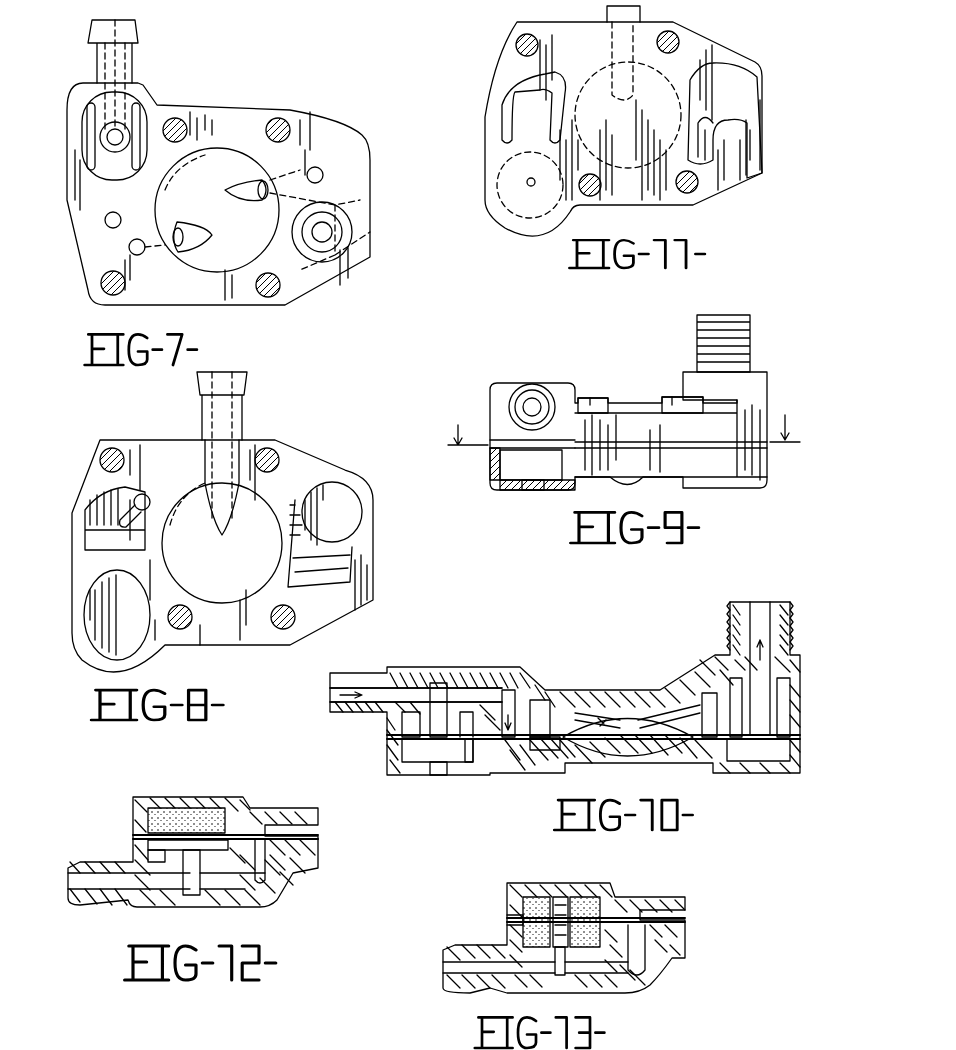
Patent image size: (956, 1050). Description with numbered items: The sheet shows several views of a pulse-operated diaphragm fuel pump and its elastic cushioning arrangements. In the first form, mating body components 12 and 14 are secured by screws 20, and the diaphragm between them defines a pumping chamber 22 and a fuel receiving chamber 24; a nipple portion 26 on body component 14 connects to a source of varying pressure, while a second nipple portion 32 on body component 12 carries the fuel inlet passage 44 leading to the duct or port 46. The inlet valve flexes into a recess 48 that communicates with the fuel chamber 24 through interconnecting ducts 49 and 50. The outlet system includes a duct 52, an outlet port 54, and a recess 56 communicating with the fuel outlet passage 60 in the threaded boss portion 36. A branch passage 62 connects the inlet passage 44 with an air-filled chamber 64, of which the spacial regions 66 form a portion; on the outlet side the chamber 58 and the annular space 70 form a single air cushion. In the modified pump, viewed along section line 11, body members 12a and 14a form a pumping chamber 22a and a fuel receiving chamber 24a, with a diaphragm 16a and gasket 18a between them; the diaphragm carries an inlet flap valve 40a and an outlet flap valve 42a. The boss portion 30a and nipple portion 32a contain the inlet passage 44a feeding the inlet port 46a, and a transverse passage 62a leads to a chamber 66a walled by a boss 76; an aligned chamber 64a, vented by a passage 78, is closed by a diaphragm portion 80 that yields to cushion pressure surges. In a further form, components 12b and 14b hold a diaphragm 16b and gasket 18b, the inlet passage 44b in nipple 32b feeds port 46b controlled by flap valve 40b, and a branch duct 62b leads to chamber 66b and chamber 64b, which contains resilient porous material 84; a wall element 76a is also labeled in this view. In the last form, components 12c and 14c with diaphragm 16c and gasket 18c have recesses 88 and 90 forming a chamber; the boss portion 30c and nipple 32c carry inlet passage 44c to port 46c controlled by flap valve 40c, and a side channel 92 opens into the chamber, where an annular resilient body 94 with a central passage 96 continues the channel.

In FIG. 7, the body component 12 is at (370, 170).
In FIG. 9, the pump body member 12a is at (495, 397).
In FIG. 10, the pump body member 12a is at (385, 722).
In FIG. 12, the pump component 12b is at (298, 878).
In FIG. 13, the pump component 12c is at (665, 965).
In FIG. 8, the body component 14 is at (373, 568).
In FIG. 11, the body component 14 is at (623, 129).
In FIG. 9, the pump body member 14a is at (498, 490).
In FIG. 10, the pump body member 14a is at (555, 762).
In FIG. 12, the pump component 14b is at (230, 805).
In FIG. 13, the pump component 14c is at (620, 893).
In FIG. 10, the diaphragm 16a is at (613, 685).
In FIG. 12, the diaphragm 16b is at (318, 862).
In FIG. 13, the diaphragm 16c is at (683, 935).
In FIG. 10, the gasket 18a is at (590, 752).
In FIG. 12, the gasket 18b is at (300, 832).
In FIG. 13, the gasket 18c is at (687, 915).
In FIG. 7, the screws 20 is at (176, 118).
In FIG. 8, the screws 20 is at (106, 452).
In FIG. 11, the screws 20 is at (517, 42).
In FIG. 9, the screws 20 is at (668, 400).
In FIG. 8, the pumping chamber 22 is at (203, 490).
In FIG. 10, the pulsing or pumping chamber 22a is at (628, 752).
In FIG. 7, the fuel receiving chamber 24 is at (228, 165).
In FIG. 11, the fuel receiving chamber 24 is at (628, 115).
In FIG. 10, the fuel receiving chamber 24a is at (640, 712).
In FIG. 8, the nipple portion 26 is at (242, 410).
In FIG. 11, the nipple portion 26 is at (640, 12).
In FIG. 10, the boss portion 30a is at (487, 673).
In FIG. 13, the boss portion 30c is at (600, 992).
In FIG. 7, the second nipple portion 32 is at (132, 52).
In FIG. 9, the second nipple portion 32 is at (528, 390).
In FIG. 10, the nipple portion 32a is at (375, 680).
In FIG. 12, the nipple portion 32b is at (95, 865).
In FIG. 13, the nipple portion 32c is at (475, 992).
In FIG. 7, the boss portion 36 is at (355, 203).
In FIG. 11, the fuel inlet flap valve 40a is at (525, 97).
In FIG. 10, the fuel inlet flap valve 40a is at (512, 760).
In FIG. 12, the inlet flap valve 40b is at (262, 840).
In FIG. 13, the flap valve 40c is at (640, 897).
In FIG. 11, the outlet flap valve 42a is at (735, 140).
In FIG. 10, the outlet flap valve 42a is at (710, 745).
In FIG. 7, the fuel inlet passage 44 is at (120, 72).
In FIG. 9, the fuel inlet passage 44 is at (536, 402).
In FIG. 10, the fuel inlet passage 44a is at (393, 690).
In FIG. 12, the fuel inlet passage 44b is at (160, 885).
In FIG. 13, the fuel inlet passage 44c is at (447, 968).
In FIG. 7, the duct or port 46 is at (105, 221).
In FIG. 10, the inlet port or duct 46a is at (513, 695).
In FIG. 12, the port or duct 46b is at (272, 895).
In FIG. 13, the duct or port 46c is at (645, 962).
In FIG. 8, the recess or passage 48 is at (100, 505).
In FIG. 7, the duct 49 is at (130, 249).
In FIG. 7, the duct 50 is at (176, 232).
In FIG. 7, the duct 52 is at (258, 200).
In FIG. 7, the outlet port or duct 54 is at (323, 177).
In FIG. 8, the recess 56 is at (342, 572).
In FIG. 8, the chamber 58 is at (349, 500).
In FIG. 7, the fuel outlet passage 60 is at (330, 237).
In FIG. 7, the branch passage 62 is at (113, 137).
In FIG. 10, the branch or transverse passage 62a is at (438, 683).
In FIG. 12, the branch passage or duct 62b is at (197, 880).
In FIG. 8, the chamber 64 is at (100, 637).
In FIG. 9, the recess or chamber 64a is at (505, 470).
In FIG. 10, the recess or chamber 64a is at (410, 760).
In FIG. 12, the chamber 64b is at (150, 808).
In FIG. 7, the spacial regions 66 is at (82, 135).
In FIG. 10, the space or chamber 66a is at (410, 727).
In FIG. 12, the space or chamber 66b is at (148, 848).
In FIG. 7, the annular space 70 is at (352, 231).
In FIG. 10, the boss 76 is at (405, 750).
In FIG. 12, the valve 76a is at (152, 862).
In FIG. 9, the vent opening or passage 78 is at (533, 490).
In FIG. 10, the vent opening or passage 78 is at (437, 768).
In FIG. 11, the portion of diaphragm 80 is at (520, 212).
In FIG. 10, the portion of diaphragm 80 is at (468, 752).
In FIG. 12, the resilient, porous or cellular material 84 is at (185, 820).
In FIG. 13, the recess 88 is at (520, 932).
In FIG. 13, the mating recess 90 is at (590, 900).
In FIG. 13, the side branch or channel 92 is at (558, 978).
In FIG. 13, the resilient or elastic body 94 is at (530, 900).
In FIG. 13, the central passage 96 is at (561, 900).
In FIG. 9, the section line 11 is at (620, 425).